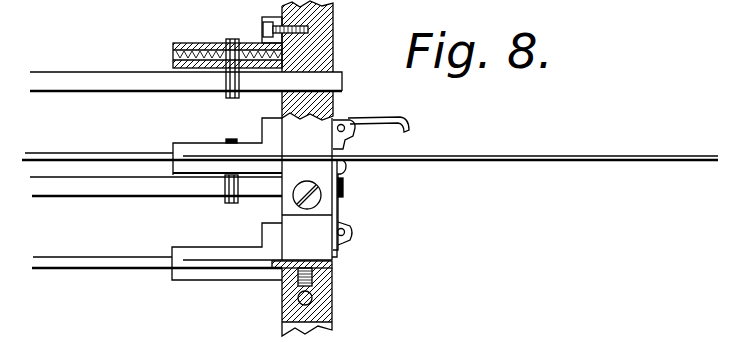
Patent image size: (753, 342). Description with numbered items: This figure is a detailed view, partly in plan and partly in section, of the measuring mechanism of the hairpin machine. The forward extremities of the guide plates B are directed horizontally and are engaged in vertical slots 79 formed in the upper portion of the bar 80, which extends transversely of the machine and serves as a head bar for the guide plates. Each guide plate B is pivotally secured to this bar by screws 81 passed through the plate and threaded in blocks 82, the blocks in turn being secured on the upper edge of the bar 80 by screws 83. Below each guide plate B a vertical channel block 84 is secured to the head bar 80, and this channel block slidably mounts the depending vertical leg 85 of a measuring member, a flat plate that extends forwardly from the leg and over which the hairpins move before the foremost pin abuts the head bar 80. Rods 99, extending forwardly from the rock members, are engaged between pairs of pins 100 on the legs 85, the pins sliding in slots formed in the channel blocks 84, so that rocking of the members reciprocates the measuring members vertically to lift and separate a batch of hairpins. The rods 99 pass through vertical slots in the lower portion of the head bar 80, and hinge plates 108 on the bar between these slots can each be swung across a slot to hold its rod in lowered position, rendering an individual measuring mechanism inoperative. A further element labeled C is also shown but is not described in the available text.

The vertical slots 79 is at (300, 156).
The bar 80 is at (336, 46).
The screws 81 is at (334, 281).
The blocks 82 is at (334, 304).
The screws 83 is at (298, 298).
The channel block 84 is at (184, 40).
The vertical leg 85 is at (253, 43).
The rods 99 is at (65, 82).
The pins 100 is at (232, 141).
The hinge plates 108 is at (386, 120).
The guide plates B is at (98, 160).
The strip C is at (528, 156).